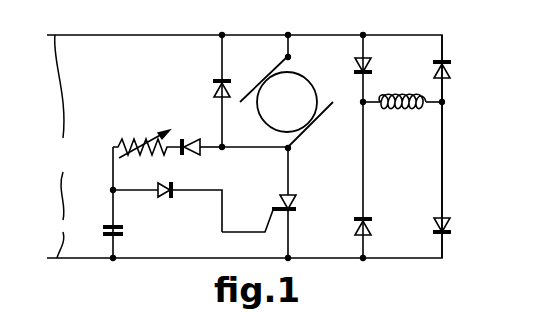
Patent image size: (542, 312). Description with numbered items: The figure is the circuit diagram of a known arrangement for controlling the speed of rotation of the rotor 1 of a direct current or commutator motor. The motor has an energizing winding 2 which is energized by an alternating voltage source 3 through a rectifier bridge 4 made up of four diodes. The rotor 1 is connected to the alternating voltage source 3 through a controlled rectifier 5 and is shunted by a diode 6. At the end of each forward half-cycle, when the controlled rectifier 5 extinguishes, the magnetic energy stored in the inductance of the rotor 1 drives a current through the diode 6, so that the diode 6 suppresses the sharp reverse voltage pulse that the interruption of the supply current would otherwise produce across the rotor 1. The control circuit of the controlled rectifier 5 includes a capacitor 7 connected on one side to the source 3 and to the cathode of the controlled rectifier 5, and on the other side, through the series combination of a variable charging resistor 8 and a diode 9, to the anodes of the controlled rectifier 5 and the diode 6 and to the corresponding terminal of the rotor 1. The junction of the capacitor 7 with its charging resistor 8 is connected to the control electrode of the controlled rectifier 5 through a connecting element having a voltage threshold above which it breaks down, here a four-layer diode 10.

The rotor 1 is at (294, 113).
The energizing winding 2 is at (400, 112).
The alternating voltage source 3 is at (49, 146).
The rectifier bridge 4 is at (407, 211).
The controlled rectifier 5 is at (298, 205).
The diode 6 is at (214, 85).
The capacitor 7 is at (125, 233).
The variable charging resistor 8 is at (137, 135).
The diode 9 is at (192, 156).
The four-layer diode 10 is at (165, 194).